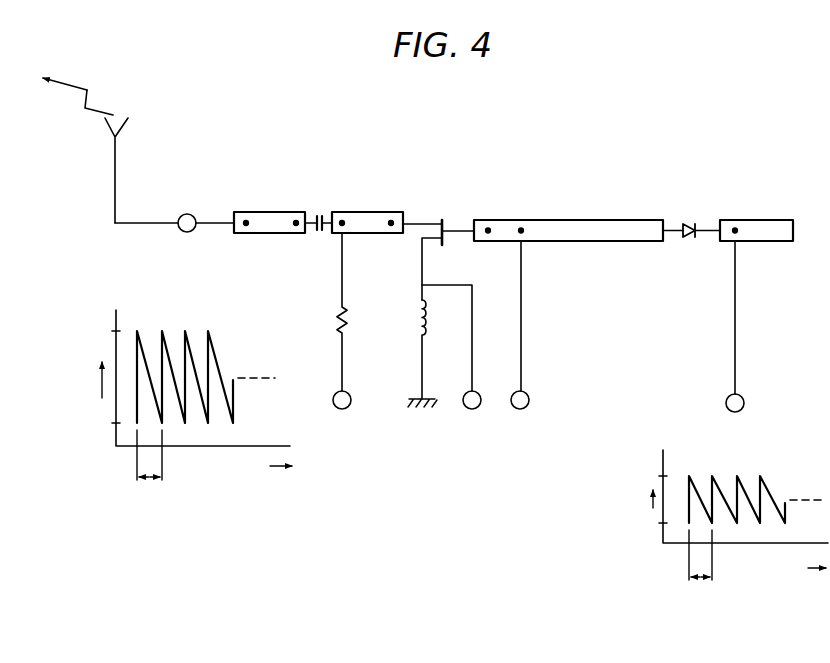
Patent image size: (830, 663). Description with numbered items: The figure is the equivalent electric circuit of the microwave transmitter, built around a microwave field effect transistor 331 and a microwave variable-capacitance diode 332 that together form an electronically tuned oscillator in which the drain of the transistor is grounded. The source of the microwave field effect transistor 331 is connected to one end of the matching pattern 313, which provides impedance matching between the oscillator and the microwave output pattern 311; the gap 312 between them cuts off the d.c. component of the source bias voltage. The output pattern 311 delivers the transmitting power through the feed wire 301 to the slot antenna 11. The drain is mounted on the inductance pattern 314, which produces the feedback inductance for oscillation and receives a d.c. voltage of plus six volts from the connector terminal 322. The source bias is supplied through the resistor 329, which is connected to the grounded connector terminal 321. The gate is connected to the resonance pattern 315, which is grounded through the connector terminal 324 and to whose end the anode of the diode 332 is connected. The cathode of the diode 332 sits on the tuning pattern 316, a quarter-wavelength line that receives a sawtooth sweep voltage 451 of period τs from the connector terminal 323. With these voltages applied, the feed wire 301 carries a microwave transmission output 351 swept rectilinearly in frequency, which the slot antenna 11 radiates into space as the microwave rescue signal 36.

The microwave rescue signal 36 is at (62, 83).
The slot antenna 11 is at (129, 126).
The feed wire 301 is at (190, 213).
The microwave output pattern 311 is at (270, 212).
The gap 312 is at (318, 215).
The matching pattern 313 is at (374, 214).
The microwave field effect transistor 331 is at (446, 219).
The resonance pattern 315 is at (576, 220).
The microwave variable-capacitance diode 332 is at (689, 226).
The tuning pattern 316 is at (756, 220).
The resistor 329 is at (348, 318).
The inductance pattern 314 is at (417, 318).
The connector terminal 322 is at (478, 393).
The connector terminal 324 is at (529, 400).
The connector terminal 321 is at (351, 404).
The connector terminal 323 is at (744, 398).
The microwave transmission output 351 is at (219, 342).
The sawtooth sweep voltage 451 is at (771, 487).